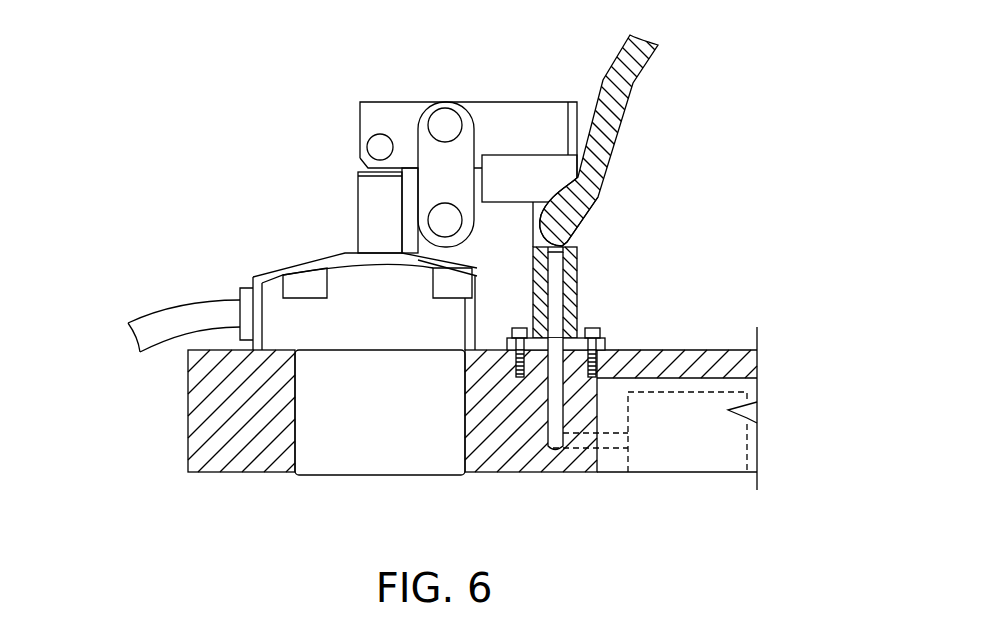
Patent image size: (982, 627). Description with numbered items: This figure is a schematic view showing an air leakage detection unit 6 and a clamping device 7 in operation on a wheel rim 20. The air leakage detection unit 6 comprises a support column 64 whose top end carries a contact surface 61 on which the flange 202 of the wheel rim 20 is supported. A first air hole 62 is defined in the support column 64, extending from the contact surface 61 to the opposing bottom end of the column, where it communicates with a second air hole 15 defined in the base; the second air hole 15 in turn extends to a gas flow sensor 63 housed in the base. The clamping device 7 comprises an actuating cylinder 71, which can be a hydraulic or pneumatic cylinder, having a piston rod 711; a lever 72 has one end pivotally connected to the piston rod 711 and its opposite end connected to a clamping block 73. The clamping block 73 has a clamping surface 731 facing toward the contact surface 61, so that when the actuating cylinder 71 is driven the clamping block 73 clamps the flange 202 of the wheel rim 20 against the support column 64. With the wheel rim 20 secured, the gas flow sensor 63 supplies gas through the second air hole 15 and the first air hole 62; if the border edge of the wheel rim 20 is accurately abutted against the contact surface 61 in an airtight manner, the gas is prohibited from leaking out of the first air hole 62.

The clamping device 7 is at (330, 255).
The actuating cylinder 71 is at (320, 315).
The piston rod 711 is at (372, 202).
The lever 72 is at (493, 112).
The clamping block 73 is at (528, 173).
The clamping surface 731 is at (562, 195).
The wheel rim 20 is at (648, 65).
The flange 202 is at (567, 242).
The air leakage detection unit 6 is at (580, 255).
The contact surface 61 is at (585, 222).
The first air hole 62 is at (555, 278).
The support column 64 is at (540, 295).
The second air hole 15 is at (552, 437).
The gas flow sensor 63 is at (705, 448).